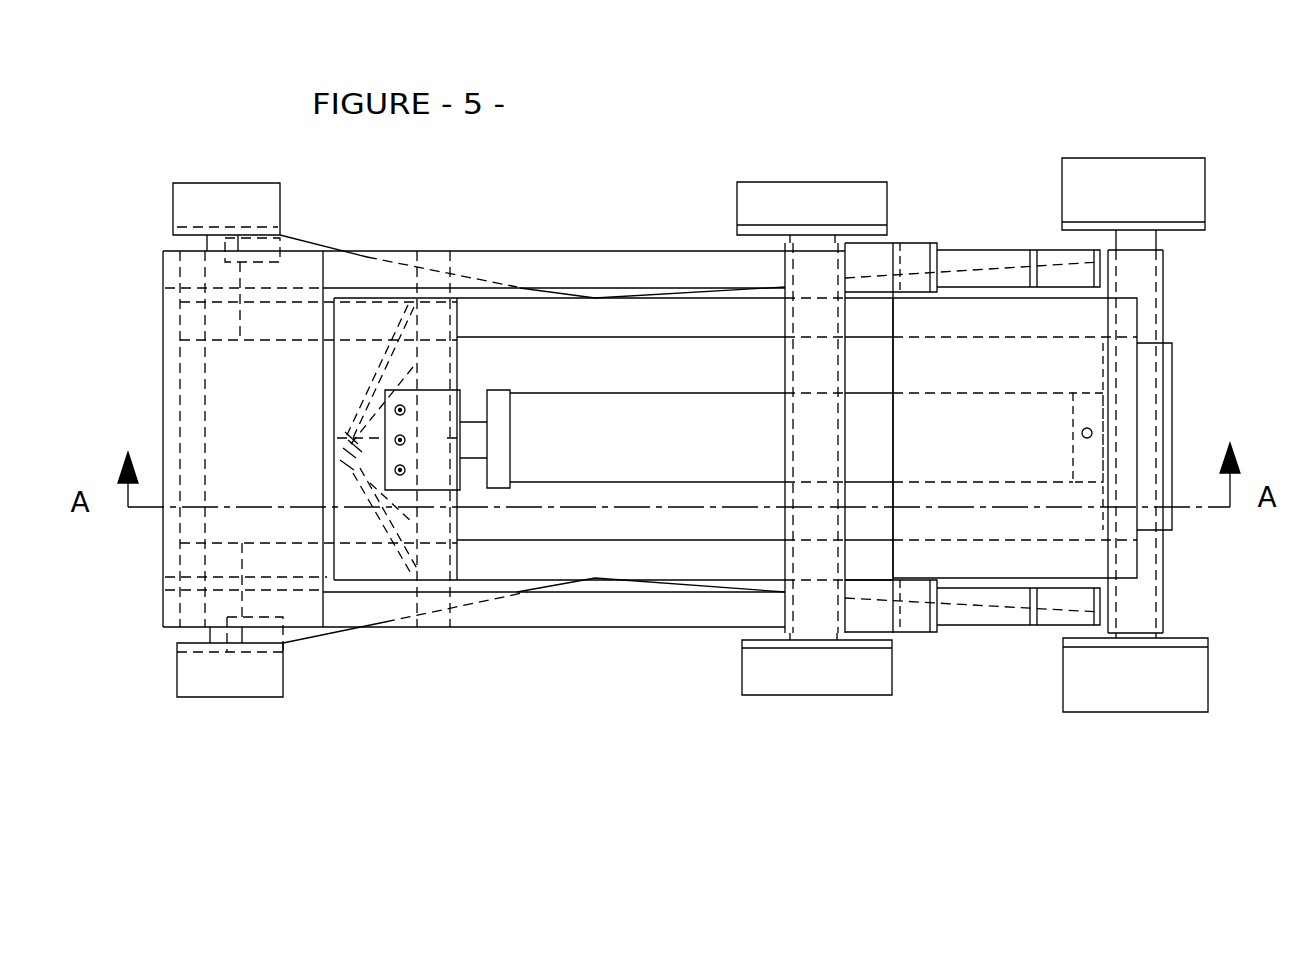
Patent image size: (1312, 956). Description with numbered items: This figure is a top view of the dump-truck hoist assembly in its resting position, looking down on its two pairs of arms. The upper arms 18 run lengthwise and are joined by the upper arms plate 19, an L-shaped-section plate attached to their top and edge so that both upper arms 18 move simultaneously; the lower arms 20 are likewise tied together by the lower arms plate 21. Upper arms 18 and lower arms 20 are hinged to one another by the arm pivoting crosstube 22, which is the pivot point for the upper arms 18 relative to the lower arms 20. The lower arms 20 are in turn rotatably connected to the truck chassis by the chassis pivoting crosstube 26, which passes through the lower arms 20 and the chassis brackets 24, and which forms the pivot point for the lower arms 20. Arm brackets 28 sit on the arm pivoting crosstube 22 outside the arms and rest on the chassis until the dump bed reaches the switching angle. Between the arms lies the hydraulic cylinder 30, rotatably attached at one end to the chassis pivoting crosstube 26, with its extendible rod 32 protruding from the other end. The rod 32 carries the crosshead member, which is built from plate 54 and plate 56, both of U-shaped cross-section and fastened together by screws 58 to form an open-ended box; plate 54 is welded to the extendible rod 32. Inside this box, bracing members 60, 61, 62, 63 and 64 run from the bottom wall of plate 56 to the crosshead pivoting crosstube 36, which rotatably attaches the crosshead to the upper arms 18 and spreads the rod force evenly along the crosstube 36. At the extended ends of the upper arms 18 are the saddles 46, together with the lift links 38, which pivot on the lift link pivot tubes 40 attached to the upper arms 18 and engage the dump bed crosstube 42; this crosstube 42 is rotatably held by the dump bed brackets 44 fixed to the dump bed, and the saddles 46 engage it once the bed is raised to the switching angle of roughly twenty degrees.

The upper arms 18 is at (642, 268).
The upper arms plate 19 is at (172, 382).
The lower arms 20 is at (583, 315).
The lower arms plate 21 is at (1067, 363).
The arm pivoting crosstube 22 is at (217, 275).
The chassis brackets 24 is at (1112, 180).
The chassis pivoting crosstube 26 is at (1147, 577).
The arm brackets 28 is at (265, 203).
The hydraulic cylinder 30 is at (622, 420).
The extendible rod 32 is at (477, 430).
The crosshead pivoting crosstube 36 is at (448, 317).
The lift links 38 is at (892, 240).
The lift link pivot tubes 40 is at (920, 245).
The dump bed crosstube 42 is at (803, 610).
The dump bed brackets 44 is at (762, 193).
The saddles 46 is at (1053, 255).
The plate 54 is at (463, 485).
The plate 56 is at (352, 320).
The screws 58 is at (380, 417).
The bracing member 60 is at (380, 360).
The bracing member 61 is at (410, 380).
The bracing member 62 is at (343, 463).
The bracing member 63 is at (360, 480).
The bracing member 64 is at (380, 528).